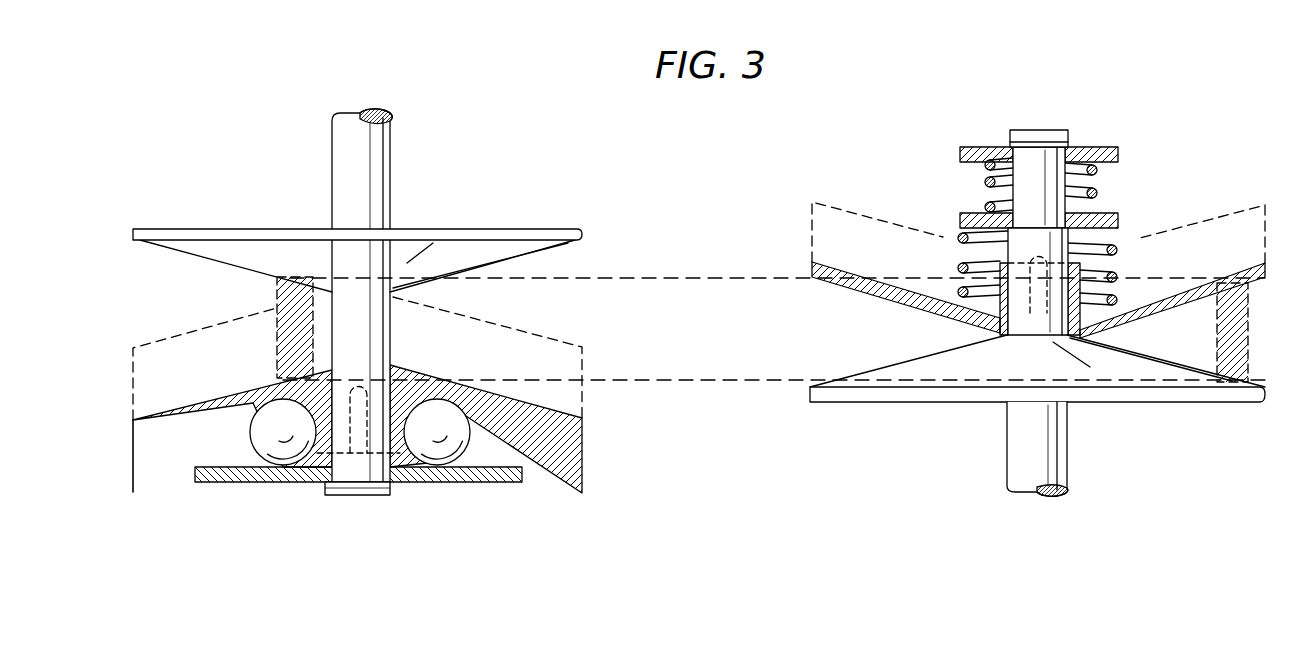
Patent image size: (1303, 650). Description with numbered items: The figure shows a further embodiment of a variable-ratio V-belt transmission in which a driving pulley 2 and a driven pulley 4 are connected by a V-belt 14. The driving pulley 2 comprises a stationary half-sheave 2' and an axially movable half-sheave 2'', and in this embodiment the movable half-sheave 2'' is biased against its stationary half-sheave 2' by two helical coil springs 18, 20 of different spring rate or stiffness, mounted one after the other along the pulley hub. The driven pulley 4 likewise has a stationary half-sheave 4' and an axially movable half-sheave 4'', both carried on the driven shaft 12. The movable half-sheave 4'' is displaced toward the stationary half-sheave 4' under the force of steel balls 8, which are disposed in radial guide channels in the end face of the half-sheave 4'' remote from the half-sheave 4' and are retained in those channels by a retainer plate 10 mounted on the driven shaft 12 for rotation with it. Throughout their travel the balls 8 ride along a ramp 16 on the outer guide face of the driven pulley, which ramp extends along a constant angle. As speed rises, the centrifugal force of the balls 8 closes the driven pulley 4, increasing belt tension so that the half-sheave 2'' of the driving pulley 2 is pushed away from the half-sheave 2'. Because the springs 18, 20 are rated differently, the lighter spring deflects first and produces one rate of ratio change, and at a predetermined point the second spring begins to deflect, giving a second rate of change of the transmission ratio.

The driving pulley 2 is at (1037, 403).
The stationary half-sheave 2' is at (1037, 417).
The axially movable half-sheave 2'' is at (1038, 270).
The driven pulley 4 is at (357, 233).
The stationary half-sheave 4' is at (357, 210).
The axially movable half-sheave 4'' is at (357, 414).
The steel balls 8 is at (457, 447).
The retainer plate 10 is at (428, 480).
The driven shaft 12 is at (370, 153).
The V-belt 14 is at (698, 290).
The ramp 16 is at (157, 484).
The helical coil spring 18 is at (1113, 270).
The helical coil spring 20 is at (1097, 192).